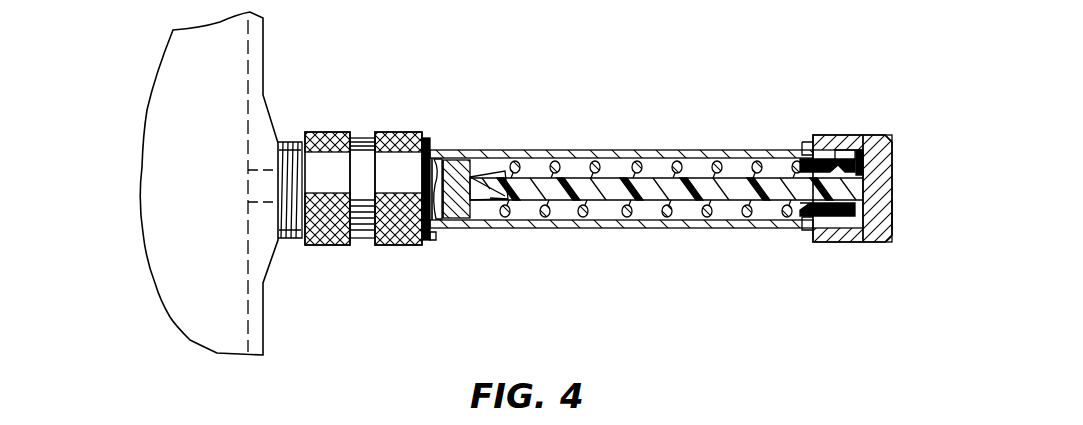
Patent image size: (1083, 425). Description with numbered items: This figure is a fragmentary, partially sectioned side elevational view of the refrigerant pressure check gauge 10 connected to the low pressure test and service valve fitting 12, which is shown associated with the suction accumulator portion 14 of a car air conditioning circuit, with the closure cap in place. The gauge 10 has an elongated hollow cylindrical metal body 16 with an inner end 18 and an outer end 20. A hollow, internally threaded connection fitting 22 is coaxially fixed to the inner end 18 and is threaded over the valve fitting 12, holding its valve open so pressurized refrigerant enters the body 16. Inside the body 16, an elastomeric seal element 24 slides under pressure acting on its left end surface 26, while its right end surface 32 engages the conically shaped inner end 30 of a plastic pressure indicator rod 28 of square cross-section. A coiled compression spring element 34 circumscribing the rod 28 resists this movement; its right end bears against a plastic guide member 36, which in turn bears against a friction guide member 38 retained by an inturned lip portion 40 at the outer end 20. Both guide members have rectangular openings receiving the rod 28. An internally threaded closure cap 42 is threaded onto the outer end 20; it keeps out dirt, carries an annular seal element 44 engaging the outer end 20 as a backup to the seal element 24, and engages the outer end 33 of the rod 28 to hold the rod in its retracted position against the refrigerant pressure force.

The refrigerant pressure check gauge 10 is at (634, 99).
The test and service valve fitting 12 is at (288, 140).
The suction accumulator portion 14 is at (266, 71).
The gauge body 16 is at (668, 228).
The inner end 18 is at (434, 240).
The outer end 20 is at (823, 243).
The connection fitting 22 is at (335, 131).
The seal element 24 is at (457, 160).
The left end surface 26 is at (440, 170).
The pressure indicator rod 28 is at (738, 158).
The inner end 30 is at (492, 198).
The right end surface 32 is at (476, 175).
The outer end 33 is at (892, 187).
The coiled compression spring element 34 is at (565, 150).
The guide member 36 is at (808, 143).
The friction guide member 38 is at (850, 138).
The inturned lip portion 40 is at (891, 142).
The closure cap 42 is at (893, 212).
The annular seal element 44 is at (860, 150).